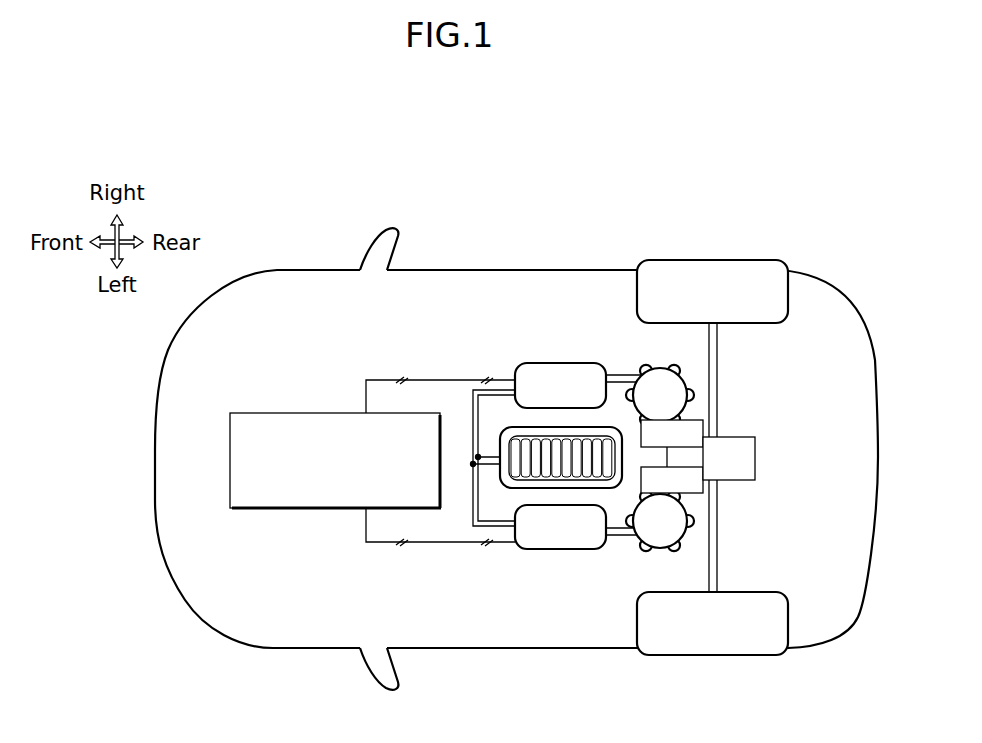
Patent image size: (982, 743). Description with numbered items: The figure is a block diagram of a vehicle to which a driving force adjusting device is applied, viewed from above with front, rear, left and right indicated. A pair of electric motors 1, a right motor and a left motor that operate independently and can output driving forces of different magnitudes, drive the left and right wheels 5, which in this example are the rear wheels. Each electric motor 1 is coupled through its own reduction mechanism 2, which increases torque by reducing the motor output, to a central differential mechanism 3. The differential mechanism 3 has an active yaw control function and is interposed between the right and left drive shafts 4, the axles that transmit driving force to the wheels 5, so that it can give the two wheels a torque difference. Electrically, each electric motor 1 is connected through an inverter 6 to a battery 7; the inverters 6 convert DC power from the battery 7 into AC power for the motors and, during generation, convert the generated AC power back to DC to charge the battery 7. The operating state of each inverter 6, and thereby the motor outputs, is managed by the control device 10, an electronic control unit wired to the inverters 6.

The electric motor 1 is at (690, 397).
The reduction mechanism 2 is at (703, 425).
The differential mechanism 3 is at (755, 460).
The drive shaft 4 is at (717, 341).
The wheel 5 is at (791, 287).
The inverter 6 is at (551, 363).
The battery 7 is at (507, 488).
The control device 10 is at (229, 462).